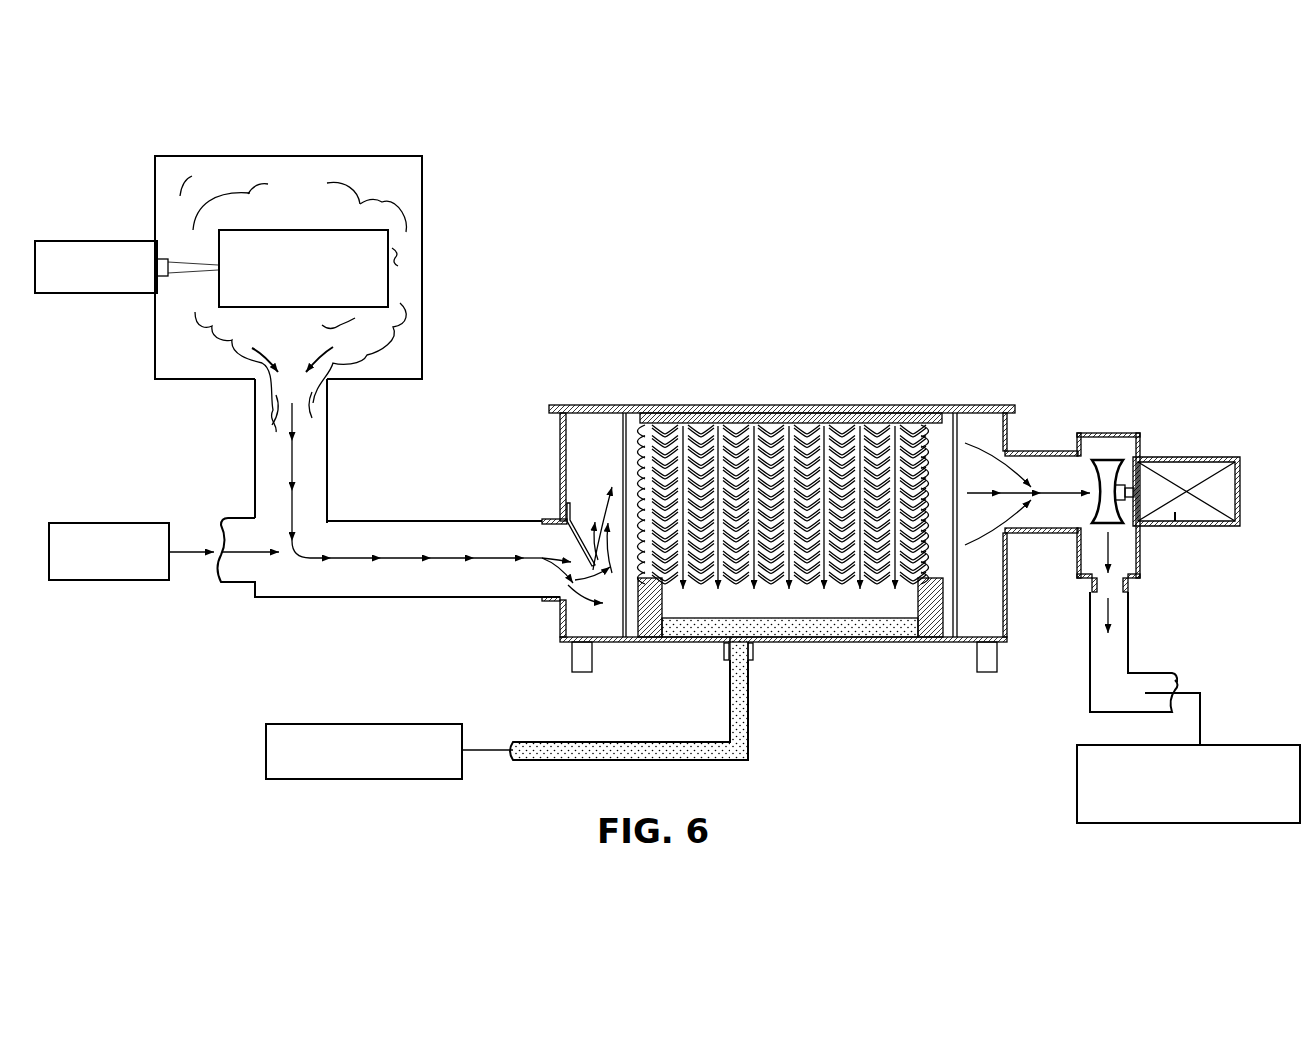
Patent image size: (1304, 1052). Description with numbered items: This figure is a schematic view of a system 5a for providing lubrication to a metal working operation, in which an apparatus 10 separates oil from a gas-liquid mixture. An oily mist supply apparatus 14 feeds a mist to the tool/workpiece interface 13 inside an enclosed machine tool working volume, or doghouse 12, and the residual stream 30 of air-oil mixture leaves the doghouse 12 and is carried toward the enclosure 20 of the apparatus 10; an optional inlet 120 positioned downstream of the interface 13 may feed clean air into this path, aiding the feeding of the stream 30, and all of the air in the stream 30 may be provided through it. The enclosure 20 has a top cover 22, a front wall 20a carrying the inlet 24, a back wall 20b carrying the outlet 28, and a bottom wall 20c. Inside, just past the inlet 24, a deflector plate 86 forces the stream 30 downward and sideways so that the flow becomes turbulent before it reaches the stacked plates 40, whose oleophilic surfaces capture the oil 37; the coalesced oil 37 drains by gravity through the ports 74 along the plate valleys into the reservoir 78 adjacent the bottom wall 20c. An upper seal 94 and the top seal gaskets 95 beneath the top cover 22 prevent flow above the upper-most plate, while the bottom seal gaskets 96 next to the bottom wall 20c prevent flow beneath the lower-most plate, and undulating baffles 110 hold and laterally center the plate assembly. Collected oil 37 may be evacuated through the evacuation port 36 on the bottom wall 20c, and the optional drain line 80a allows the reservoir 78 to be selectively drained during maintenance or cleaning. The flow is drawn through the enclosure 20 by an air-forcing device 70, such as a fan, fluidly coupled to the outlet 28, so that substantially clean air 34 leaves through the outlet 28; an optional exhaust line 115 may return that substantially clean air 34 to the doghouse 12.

The system 5a is at (822, 212).
The apparatus 10 is at (811, 350).
The doghouse 12 is at (178, 156).
The tool/workpiece interface 13 is at (273, 230).
The oily mist supply apparatus 14 is at (46, 241).
The optional inlet 120 is at (63, 523).
The stream 30 is at (453, 562).
The enclosure 20 is at (777, 526).
The front wall 20a is at (560, 447).
The back wall 20b is at (1007, 606).
The bottom wall 20c is at (692, 642).
The top cover 22 is at (980, 405).
The inlet 24 is at (550, 518).
The deflector plate 86 is at (574, 525).
The stacked plates 40 is at (622, 443).
The upper seal 94 is at (788, 479).
The top seal gaskets 95 is at (651, 418).
The ports 74 is at (753, 423).
The bottom seal gaskets 96 is at (648, 630).
The reservoir 78 is at (787, 607).
The oil 37 is at (855, 630).
The evacuation port 36 is at (751, 648).
The optional drain line 80a is at (730, 713).
The undulating baffles 110 is at (958, 618).
The outlet 28 is at (1018, 452).
The substantially clean air 34 is at (1058, 496).
The air-forcing device 70 is at (1101, 433).
The optional exhaust line 115 is at (1130, 645).